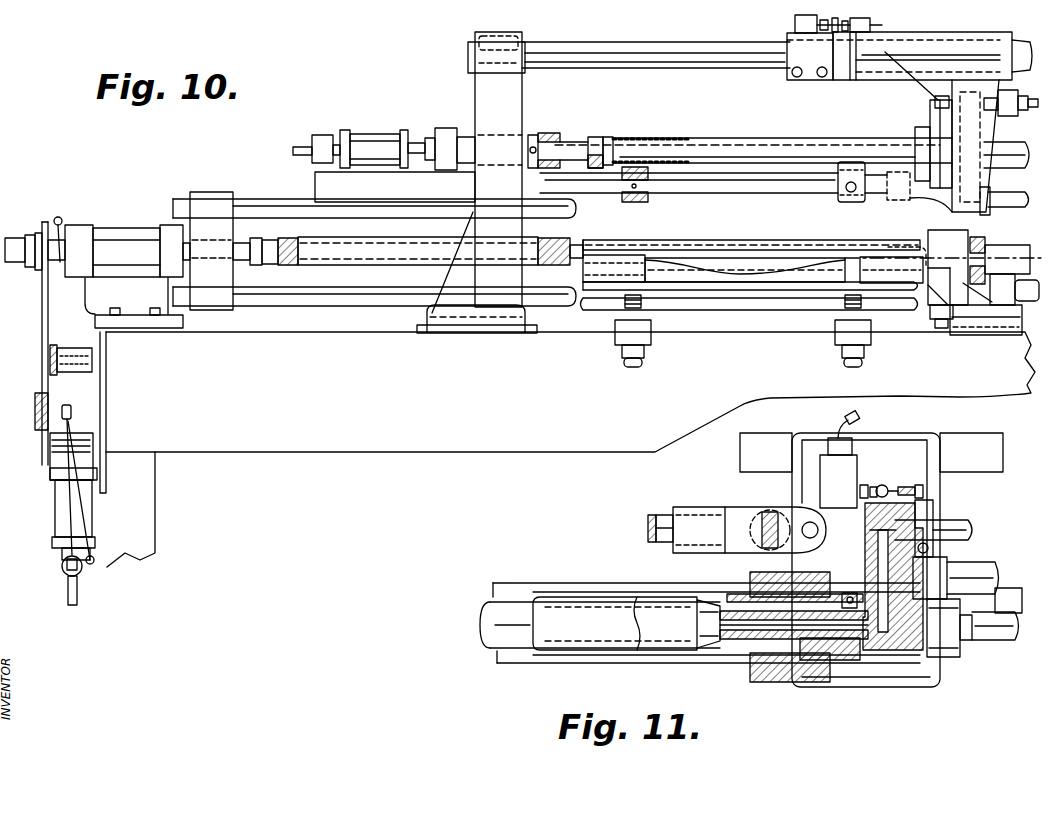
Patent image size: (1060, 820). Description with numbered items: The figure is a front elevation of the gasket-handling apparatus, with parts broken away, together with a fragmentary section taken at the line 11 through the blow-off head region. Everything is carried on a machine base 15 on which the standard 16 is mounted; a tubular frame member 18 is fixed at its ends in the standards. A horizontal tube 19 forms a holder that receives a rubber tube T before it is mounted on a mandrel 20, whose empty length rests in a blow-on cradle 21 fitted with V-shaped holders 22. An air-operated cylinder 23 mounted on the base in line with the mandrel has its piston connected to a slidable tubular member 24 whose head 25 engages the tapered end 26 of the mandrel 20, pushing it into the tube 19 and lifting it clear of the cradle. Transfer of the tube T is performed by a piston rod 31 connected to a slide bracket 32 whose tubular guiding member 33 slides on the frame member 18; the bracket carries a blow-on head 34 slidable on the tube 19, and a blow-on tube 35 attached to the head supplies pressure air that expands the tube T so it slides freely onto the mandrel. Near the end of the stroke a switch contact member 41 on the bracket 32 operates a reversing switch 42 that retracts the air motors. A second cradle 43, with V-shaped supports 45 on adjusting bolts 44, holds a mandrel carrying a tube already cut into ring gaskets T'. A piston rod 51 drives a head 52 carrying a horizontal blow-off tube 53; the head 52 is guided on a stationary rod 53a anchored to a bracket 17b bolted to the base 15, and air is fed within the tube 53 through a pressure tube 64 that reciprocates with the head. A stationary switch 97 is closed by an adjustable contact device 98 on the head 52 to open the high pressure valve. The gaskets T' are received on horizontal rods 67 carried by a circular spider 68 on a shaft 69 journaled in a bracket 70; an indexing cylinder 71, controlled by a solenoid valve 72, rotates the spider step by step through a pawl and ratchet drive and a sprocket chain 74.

In FIG. 10, the section line 11 is at (875, 256).
In FIG. 10, the machine base 15 is at (377, 447).
In FIG. 11, the machine base 15 is at (742, 452).
In FIG. 10, the standard 16 is at (475, 90).
In FIG. 10, the bracket 17b is at (988, 318).
In FIG. 11, the bracket 17b is at (784, 674).
In FIG. 10, the tubular frame member 18 is at (652, 43).
In FIG. 10, the horizontal tube (blow-on tube holder) 19 is at (1022, 128).
In FIG. 10, the mandrel 20 is at (670, 154).
In FIG. 11, the mandrel 20 is at (492, 627).
In FIG. 10, the blow-on cradle 21 is at (740, 186).
In FIG. 11, the blow-on cradle 21 is at (661, 530).
In FIG. 10, the V-shaped holders 22 is at (648, 196).
In FIG. 10, the air-operated cylinder 23 is at (380, 136).
In FIG. 10, the tubular member 24 is at (572, 137).
In FIG. 10, the head 25 is at (597, 136).
In FIG. 10, the tapered end 26 is at (612, 140).
In FIG. 10, the piston rod 31 is at (1030, 95).
In FIG. 10, the slide bracket 32 is at (962, 65).
In FIG. 10, the tubular guiding member 33 is at (880, 73).
In FIG. 10, the blow-on head 34 is at (936, 120).
In FIG. 10, the blow-on tube 35 is at (1014, 200).
In FIG. 10, the switch contact member 41 is at (848, 20).
In FIG. 10, the reversing switch 42 is at (795, 22).
In FIG. 10, the second cradle 43 is at (693, 262).
In FIG. 11, the second cradle 43 is at (565, 664).
In FIG. 10, the adjusting bolts 44 is at (616, 308).
In FIG. 10, the V-shaped supports 45 is at (632, 262).
In FIG. 11, the piston rod 51 is at (1006, 630).
In FIG. 11, the head 52 is at (903, 648).
In FIG. 10, the blow-off tube 53 is at (797, 240).
In FIG. 11, the blow-off tube 53 is at (598, 603).
In FIG. 11, the stationary rod 53a is at (978, 568).
In FIG. 11, the pressure tube 64 is at (962, 526).
In FIG. 10, the horizontal rods 67 is at (412, 200).
In FIG. 10, the circular spider 68 is at (214, 200).
In FIG. 10, the shaft 69 is at (128, 242).
In FIG. 10, the bracket 70 is at (148, 304).
In FIG. 10, the indexing cylinder 71 is at (62, 516).
In FIG. 10, the solenoid valve 72 is at (61, 566).
In FIG. 10, the sprocket chain 74 is at (42, 318).
In FIG. 11, the switch 97 is at (852, 470).
In FIG. 11, the switch operating contact device 98 is at (892, 494).
In FIG. 10, the rubber tube T is at (746, 129).
In FIG. 10, the ring gaskets T' is at (430, 244).